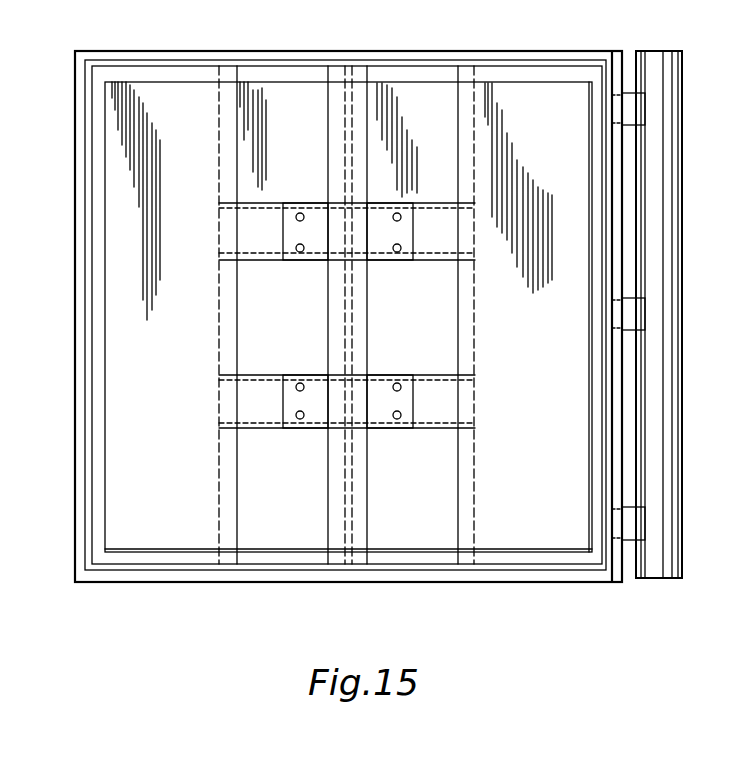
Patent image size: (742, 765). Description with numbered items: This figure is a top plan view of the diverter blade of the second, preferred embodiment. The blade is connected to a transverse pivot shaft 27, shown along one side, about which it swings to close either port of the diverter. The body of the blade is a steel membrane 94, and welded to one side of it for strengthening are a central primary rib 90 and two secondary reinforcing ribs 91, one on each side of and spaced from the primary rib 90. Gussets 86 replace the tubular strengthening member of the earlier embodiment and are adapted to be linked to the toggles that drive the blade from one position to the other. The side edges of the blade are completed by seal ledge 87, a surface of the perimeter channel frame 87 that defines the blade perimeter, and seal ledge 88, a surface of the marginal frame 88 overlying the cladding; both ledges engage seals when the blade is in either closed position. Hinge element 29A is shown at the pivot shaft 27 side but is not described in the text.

The transverse pivot shaft 27 is at (683, 228).
The hinge 29A is at (633, 517).
The gusset 86 is at (413, 261).
The seal ledge / perimeter channel frame 87 is at (552, 51).
The seal ledge / marginal frame 88 is at (298, 85).
The central primary rib 90 is at (328, 310).
The secondary reinforcing ribs 91 is at (219, 316).
The steel membrane 94 is at (567, 188).